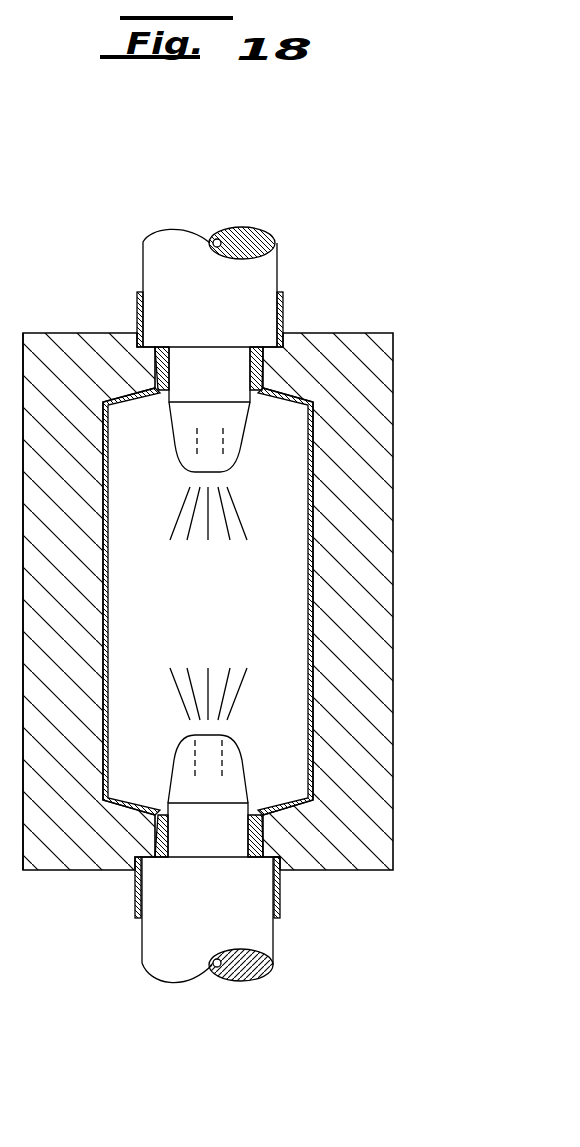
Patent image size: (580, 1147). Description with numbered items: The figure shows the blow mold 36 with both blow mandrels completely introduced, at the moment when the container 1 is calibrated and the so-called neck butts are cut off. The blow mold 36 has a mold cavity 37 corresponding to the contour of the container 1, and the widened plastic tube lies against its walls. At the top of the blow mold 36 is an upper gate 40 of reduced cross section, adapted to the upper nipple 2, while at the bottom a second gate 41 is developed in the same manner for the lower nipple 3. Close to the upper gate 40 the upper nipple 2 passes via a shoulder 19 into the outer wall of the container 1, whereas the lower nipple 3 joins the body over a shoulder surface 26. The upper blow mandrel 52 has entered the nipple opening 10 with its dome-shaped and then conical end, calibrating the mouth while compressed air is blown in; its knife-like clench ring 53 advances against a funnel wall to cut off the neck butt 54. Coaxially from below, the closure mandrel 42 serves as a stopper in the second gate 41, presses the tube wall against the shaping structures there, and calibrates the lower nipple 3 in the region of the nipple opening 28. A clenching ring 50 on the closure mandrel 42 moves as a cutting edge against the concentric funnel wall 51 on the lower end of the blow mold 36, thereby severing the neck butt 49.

The container 1 is at (313, 567).
The blow mold 36 is at (21, 396).
The shoulder 19 is at (127, 396).
The mold cavity 37 is at (313, 637).
The upper gate 40 is at (153, 378).
The clench ring 53 is at (277, 345).
The upper nipple 2 is at (167, 395).
The neck butt 54 is at (283, 305).
The nipple opening 10 is at (260, 373).
The upper blow mandrel 52 is at (212, 375).
The shoulder surface 26 is at (262, 817).
The nipple opening 28 is at (262, 833).
The closure mandrel 42 is at (262, 847).
The funnel wall 51 is at (298, 865).
The clenching ring 50 is at (268, 860).
The lower nipple 3 is at (152, 852).
The neck butt 49 is at (136, 908).
The second gate 41 is at (152, 840).